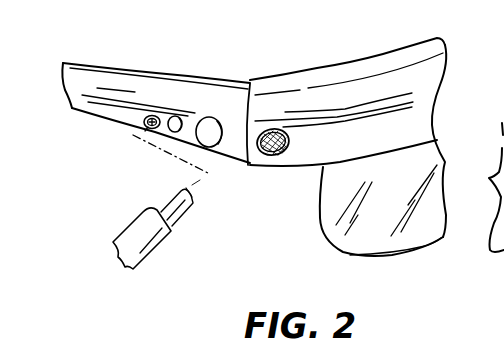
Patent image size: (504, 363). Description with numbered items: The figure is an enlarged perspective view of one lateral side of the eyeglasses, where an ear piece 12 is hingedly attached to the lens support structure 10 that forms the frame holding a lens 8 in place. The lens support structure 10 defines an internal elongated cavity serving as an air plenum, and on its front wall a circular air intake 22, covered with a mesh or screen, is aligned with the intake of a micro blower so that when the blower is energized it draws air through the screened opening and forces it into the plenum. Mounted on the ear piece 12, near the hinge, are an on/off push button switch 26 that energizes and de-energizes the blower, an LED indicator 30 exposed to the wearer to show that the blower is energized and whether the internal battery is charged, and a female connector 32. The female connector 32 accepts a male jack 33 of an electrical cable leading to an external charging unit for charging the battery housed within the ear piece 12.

The lens 8 is at (415, 253).
The lens support structure 10 is at (347, 62).
The ear piece 12 is at (104, 61).
The circular air intake 22 is at (277, 153).
The on/off push button switch 26 is at (218, 146).
The LED indicator 30 is at (173, 132).
The female connector 32 is at (146, 117).
The male jack 33 is at (149, 256).